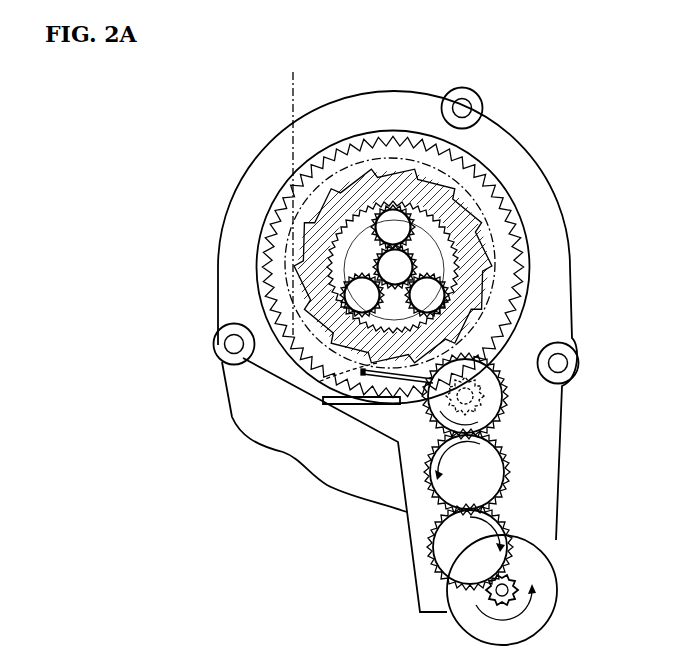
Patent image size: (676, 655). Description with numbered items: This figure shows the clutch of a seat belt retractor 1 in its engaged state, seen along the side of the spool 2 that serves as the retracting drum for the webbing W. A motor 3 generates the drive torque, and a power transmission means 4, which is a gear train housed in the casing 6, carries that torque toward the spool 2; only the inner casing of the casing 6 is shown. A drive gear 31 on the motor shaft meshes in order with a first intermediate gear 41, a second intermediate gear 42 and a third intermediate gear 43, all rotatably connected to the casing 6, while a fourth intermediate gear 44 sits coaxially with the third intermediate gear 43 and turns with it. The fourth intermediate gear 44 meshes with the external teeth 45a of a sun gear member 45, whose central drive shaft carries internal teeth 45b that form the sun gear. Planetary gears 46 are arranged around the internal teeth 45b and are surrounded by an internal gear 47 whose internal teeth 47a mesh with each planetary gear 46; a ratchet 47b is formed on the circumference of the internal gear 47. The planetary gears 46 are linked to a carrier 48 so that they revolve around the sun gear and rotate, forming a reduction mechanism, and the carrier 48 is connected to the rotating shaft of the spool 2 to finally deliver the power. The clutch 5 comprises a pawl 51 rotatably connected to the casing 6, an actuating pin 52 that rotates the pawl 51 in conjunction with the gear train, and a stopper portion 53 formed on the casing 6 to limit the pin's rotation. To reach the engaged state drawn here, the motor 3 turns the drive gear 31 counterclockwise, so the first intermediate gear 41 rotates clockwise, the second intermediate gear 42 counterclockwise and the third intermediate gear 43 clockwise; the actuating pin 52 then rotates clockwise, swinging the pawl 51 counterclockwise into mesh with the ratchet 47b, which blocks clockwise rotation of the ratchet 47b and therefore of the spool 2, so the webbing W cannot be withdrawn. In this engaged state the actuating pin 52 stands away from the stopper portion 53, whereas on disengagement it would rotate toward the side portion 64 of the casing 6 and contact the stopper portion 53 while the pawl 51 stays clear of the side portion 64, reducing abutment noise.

The seat belt retractor 1 is at (218, 146).
The spool 2 is at (505, 258).
The motor 3 is at (522, 590).
The drive gear 31 is at (520, 584).
The power transmission means 4 is at (511, 471).
The first intermediate gear 41 is at (479, 555).
The second intermediate gear 42 is at (476, 480).
The third intermediate gear 43 is at (508, 415).
The fourth intermediate gear 44 is at (493, 383).
The sun gear member 45 is at (347, 266).
The external teeth 45a is at (258, 248).
The internal teeth 45b is at (310, 208).
The planetary gears 46 is at (402, 235).
The internal gear 47 is at (435, 230).
The internal teeth 47a is at (433, 217).
The ratchet 47b is at (480, 247).
The carrier 48 is at (495, 280).
The clutch 5 is at (340, 432).
The pawl 51 is at (310, 385).
The actuating pin 52 is at (377, 393).
The stopper portion 53 is at (412, 398).
The casing 6 is at (397, 90).
The side portion 64 is at (352, 405).
The webbing W is at (290, 95).